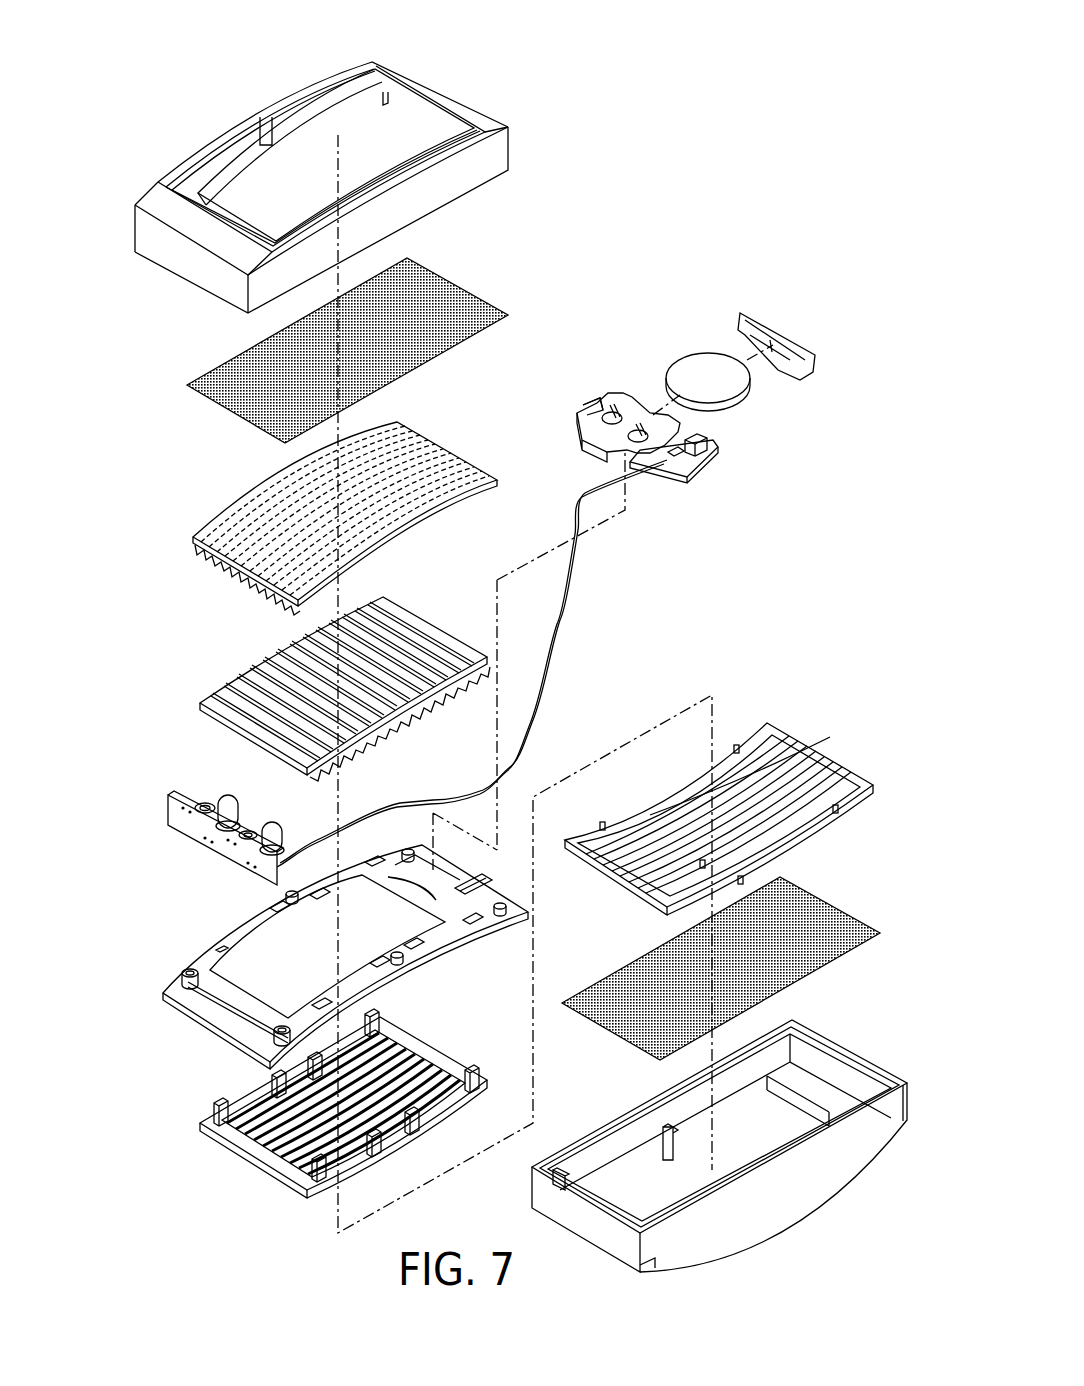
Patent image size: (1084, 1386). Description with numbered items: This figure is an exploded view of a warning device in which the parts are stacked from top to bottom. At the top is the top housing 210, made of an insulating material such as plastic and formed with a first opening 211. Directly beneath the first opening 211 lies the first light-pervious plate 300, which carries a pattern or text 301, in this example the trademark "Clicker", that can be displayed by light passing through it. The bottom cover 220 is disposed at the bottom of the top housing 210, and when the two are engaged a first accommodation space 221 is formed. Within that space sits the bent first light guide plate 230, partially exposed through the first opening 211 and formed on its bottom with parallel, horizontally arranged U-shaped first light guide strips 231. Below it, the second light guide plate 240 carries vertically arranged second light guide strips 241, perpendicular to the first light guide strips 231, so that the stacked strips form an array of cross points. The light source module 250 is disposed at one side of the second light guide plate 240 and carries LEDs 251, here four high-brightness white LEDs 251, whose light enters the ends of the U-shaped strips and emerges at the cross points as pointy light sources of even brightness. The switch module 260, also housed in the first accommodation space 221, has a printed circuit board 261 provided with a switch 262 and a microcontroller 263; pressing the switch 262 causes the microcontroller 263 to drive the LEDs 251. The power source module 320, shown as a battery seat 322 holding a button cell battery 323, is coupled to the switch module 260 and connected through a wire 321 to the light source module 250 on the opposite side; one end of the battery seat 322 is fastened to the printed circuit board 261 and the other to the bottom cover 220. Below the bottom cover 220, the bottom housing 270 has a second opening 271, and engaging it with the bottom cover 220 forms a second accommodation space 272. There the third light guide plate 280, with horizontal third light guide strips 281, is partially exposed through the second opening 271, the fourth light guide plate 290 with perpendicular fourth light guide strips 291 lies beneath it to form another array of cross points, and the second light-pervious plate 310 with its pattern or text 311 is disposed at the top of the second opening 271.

The top housing 210 is at (487, 157).
The first opening 211 is at (305, 93).
The first accommodation space 221 is at (397, 115).
The first light-pervious plate 300 is at (341, 322).
The pattern or text 301 is at (237, 355).
The first light guide plate 230 is at (330, 488).
The first light guide strips 231 is at (230, 556).
The second light guide plate 240 is at (350, 652).
The second light guide strips 241 is at (460, 677).
The light source module 250 is at (173, 806).
The LED 251 is at (225, 807).
The wire 321 is at (417, 793).
The bottom cover 220 is at (203, 1025).
The third light guide plate 280 is at (324, 1090).
The third light guide strips 281 is at (250, 1137).
The power source module 320 is at (568, 387).
The battery seat 322 is at (575, 417).
The button cell battery 323 is at (705, 360).
The switch module 260 is at (729, 499).
The printed circuit board 261 is at (673, 473).
The switch 262 is at (703, 432).
The microcontroller 263 is at (700, 472).
The fourth light guide plate 290 is at (748, 795).
The fourth light guide strips 291 is at (830, 787).
The second light-pervious plate 310 is at (726, 948).
The pattern or text 311 is at (638, 997).
The bottom housing 270 is at (722, 1130).
The second opening 271 is at (800, 1107).
The second accommodation space 272 is at (653, 1190).